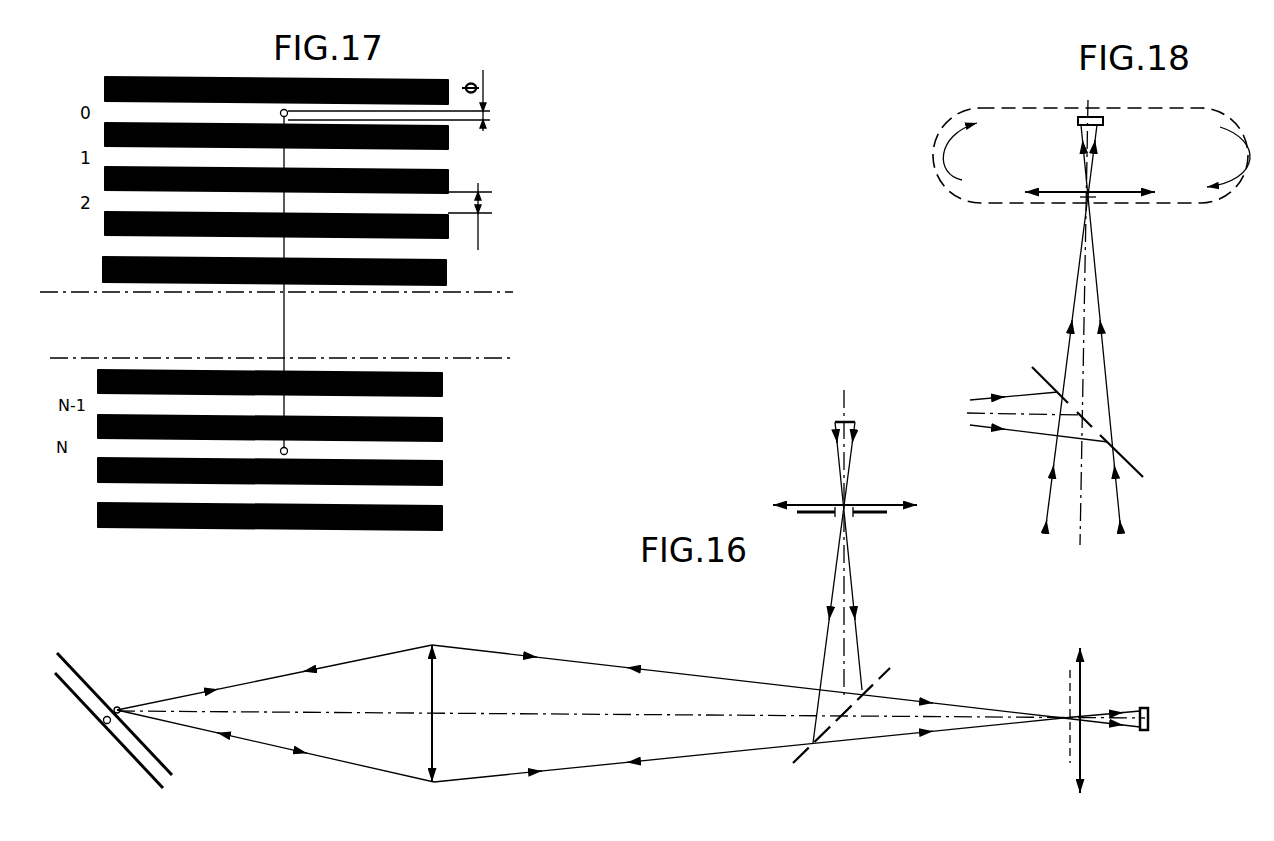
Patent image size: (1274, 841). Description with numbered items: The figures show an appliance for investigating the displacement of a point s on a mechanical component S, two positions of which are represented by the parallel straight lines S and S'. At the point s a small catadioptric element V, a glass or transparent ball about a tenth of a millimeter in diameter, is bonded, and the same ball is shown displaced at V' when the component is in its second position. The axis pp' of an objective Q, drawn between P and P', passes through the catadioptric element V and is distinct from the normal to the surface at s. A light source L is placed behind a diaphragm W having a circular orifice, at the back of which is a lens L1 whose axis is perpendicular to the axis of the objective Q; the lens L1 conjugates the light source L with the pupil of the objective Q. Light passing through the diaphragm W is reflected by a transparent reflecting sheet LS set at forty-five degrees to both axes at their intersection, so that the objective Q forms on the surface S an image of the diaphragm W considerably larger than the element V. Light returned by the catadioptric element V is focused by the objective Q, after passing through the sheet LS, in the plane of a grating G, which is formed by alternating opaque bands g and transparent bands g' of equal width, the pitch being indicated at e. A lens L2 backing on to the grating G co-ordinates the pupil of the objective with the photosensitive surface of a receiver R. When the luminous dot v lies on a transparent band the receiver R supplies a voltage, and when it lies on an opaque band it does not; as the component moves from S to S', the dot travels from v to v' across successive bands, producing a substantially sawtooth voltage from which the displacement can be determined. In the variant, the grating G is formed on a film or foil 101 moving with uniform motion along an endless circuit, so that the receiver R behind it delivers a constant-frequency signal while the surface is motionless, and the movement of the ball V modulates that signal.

In FIG. 18, the film or foil 101 is at (1230, 129).
In FIG. 16, the mechanical component S is at (114, 707).
In FIG. 16, the second position of the component S' is at (103, 730).
In FIG. 16, the catadioptric element V is at (113, 697).
In FIG. 16, the catadioptric element in second position V' is at (96, 737).
In FIG. 16, the point s is at (91, 711).
In FIG. 16, the axis end point P is at (395, 713).
In FIG. 16, the axis end point P' is at (537, 701).
In FIG. 16, the objective Q is at (432, 740).
In FIG. 18, the transparent reflecting sheet LS is at (1104, 425).
In FIG. 16, the transparent reflecting sheet LS is at (829, 727).
In FIG. 16, the light source L is at (851, 414).
In FIG. 16, the lens L1 is at (855, 507).
In FIG. 16, the diaphragm W is at (848, 516).
In FIG. 18, the grating G is at (1105, 206).
In FIG. 16, the grating G is at (1057, 721).
In FIG. 18, the lens L2 is at (1090, 180).
In FIG. 16, the lens L2 is at (1091, 723).
In FIG. 18, the receiver R is at (1098, 126).
In FIG. 16, the receiver R is at (1150, 708).
In FIG. 17, the luminous dot v is at (271, 277).
In FIG. 17, the luminous dot in second position v' is at (269, 451).
In FIG. 17, the opaque band g is at (302, 303).
In FIG. 17, the transparent band g' is at (475, 167).
In FIG. 17, the grating pitch e is at (390, 160).